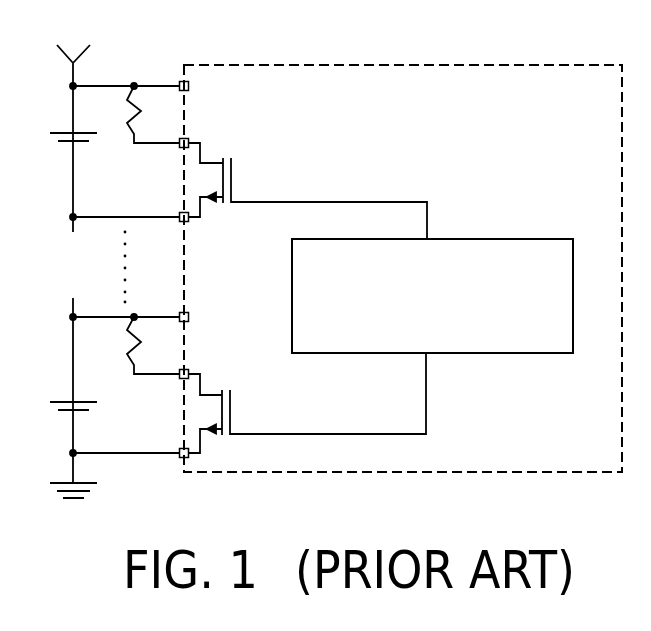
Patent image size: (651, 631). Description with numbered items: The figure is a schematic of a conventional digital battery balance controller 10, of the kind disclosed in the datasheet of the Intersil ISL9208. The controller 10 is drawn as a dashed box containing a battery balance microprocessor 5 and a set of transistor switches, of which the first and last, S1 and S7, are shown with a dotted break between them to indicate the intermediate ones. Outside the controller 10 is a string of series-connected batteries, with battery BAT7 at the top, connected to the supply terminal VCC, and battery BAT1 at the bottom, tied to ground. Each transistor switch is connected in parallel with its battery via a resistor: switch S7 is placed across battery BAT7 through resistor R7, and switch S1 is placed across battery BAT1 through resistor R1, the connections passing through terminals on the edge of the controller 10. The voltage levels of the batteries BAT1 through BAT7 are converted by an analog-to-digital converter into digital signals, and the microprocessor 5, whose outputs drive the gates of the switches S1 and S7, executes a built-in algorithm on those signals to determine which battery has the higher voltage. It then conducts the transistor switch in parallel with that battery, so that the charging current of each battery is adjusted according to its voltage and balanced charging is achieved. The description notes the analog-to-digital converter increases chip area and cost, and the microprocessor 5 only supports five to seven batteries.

The digital battery balance controller 10 is at (552, 70).
The battery balance microprocessor 5 is at (430, 246).
The supply voltage terminal VCC is at (75, 49).
The battery BAT7 is at (59, 159).
The battery BAT1 is at (59, 390).
The resistor R7 is at (153, 114).
The resistor R1 is at (153, 345).
The transistor switch S7 is at (308, 177).
The transistor switch S1 is at (308, 403).